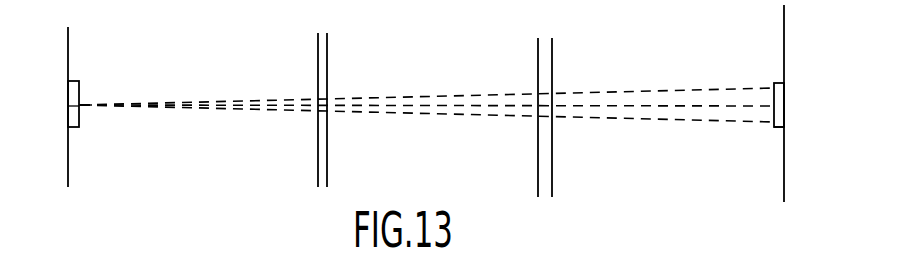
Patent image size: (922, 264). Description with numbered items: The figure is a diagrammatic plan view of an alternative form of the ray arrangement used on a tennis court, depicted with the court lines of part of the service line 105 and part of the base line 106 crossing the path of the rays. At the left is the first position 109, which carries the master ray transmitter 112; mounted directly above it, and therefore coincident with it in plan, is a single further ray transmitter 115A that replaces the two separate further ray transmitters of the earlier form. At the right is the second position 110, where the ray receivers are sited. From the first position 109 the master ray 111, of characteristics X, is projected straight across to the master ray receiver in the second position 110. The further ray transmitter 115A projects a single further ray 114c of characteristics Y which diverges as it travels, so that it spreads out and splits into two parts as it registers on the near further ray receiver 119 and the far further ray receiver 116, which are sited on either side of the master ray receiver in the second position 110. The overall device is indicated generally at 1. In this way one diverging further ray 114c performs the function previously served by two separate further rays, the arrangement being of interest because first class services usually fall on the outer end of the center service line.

The optical system / mask plane 1 is at (69, 42).
The first position 109 is at (68, 95).
The master ray transmitter 112 is at (68, 106).
The further ray transmitter 115A is at (80, 104).
The service line 105 is at (318, 48).
The base line 106 is at (553, 53).
The further ray 114c is at (437, 97).
The master ray 111 is at (588, 105).
The second position 110 is at (787, 107).
The near further ray receiver 119 is at (774, 88).
The far further ray receiver 116 is at (774, 125).